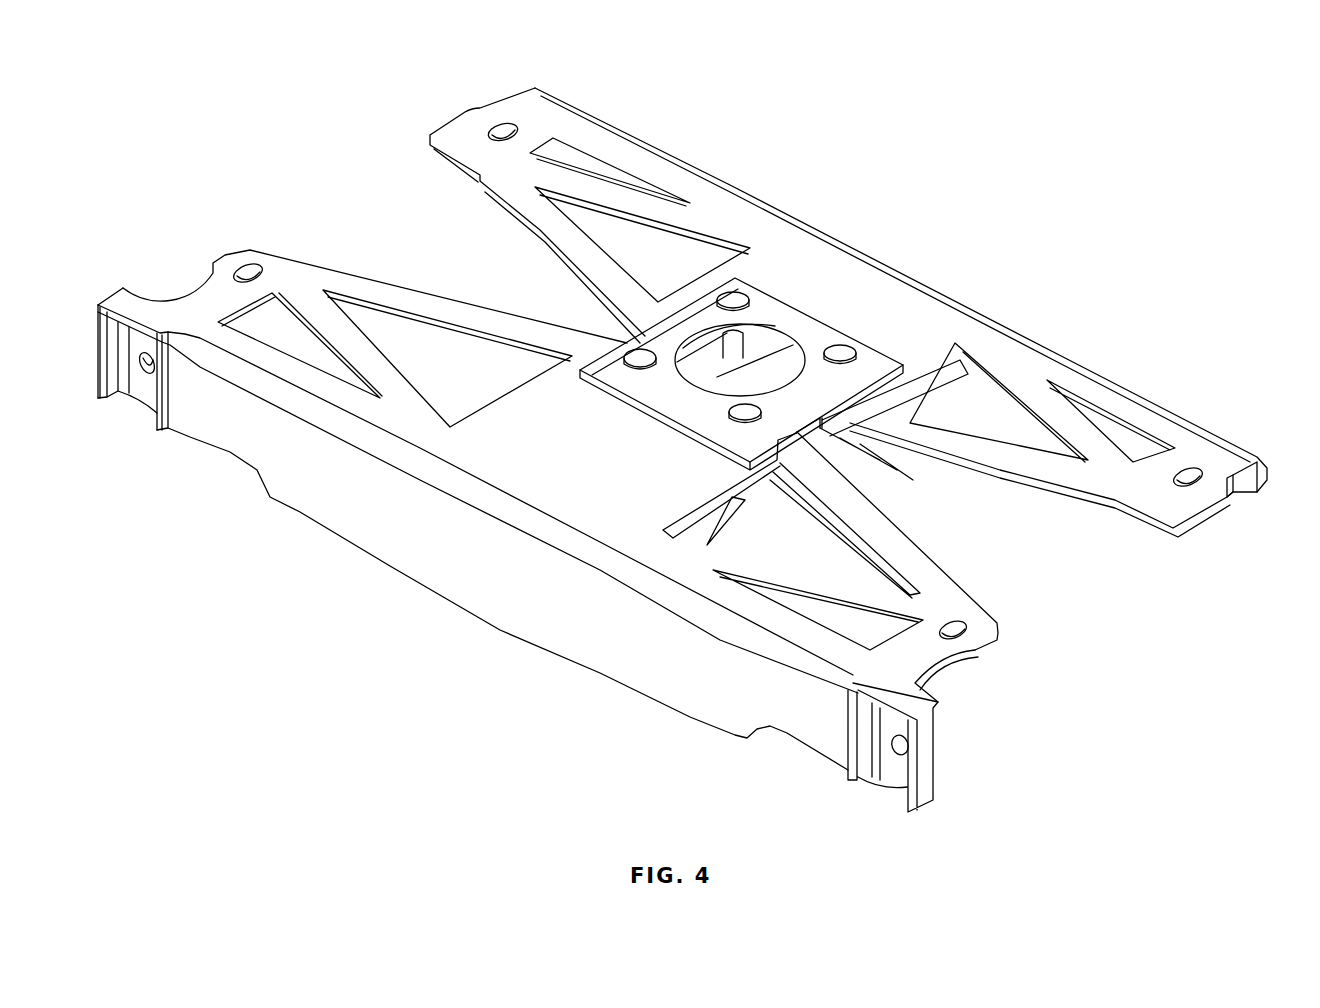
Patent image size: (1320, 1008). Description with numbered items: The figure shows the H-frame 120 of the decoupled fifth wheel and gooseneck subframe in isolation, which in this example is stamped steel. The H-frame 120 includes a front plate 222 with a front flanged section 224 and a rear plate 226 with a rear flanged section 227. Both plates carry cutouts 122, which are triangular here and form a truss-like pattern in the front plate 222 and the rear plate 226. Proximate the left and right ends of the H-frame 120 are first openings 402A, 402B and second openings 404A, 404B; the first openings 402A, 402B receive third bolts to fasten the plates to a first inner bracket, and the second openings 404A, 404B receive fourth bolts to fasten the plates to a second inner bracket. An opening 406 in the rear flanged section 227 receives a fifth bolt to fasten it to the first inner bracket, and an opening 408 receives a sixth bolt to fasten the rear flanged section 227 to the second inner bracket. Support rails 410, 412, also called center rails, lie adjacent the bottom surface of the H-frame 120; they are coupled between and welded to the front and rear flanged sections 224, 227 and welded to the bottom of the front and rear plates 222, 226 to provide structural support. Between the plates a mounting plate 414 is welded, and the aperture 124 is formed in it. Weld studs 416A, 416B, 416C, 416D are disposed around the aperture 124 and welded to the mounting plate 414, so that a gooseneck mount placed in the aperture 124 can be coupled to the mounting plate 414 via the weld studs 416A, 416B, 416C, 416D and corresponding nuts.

The H-frame 120 is at (248, 118).
The cutouts 122 is at (407, 318).
The aperture 124 is at (793, 342).
The front plate 222 is at (808, 252).
The front flanged section 224 is at (1262, 497).
The rear plate 226 is at (472, 455).
The rear flanged section 227 is at (480, 575).
The first opening 402A is at (967, 640).
The first opening 402B is at (1200, 468).
The second opening 404A is at (243, 267).
The second opening 404B is at (502, 125).
The opening 406 is at (897, 749).
The opening 408 is at (147, 374).
The support rail 410 is at (863, 537).
The support rail 412 is at (947, 467).
The mounting plate 414 is at (745, 340).
The weld stud 416A is at (717, 415).
The weld stud 416B is at (860, 348).
The weld stud 416C is at (588, 375).
The weld stud 416D is at (743, 290).